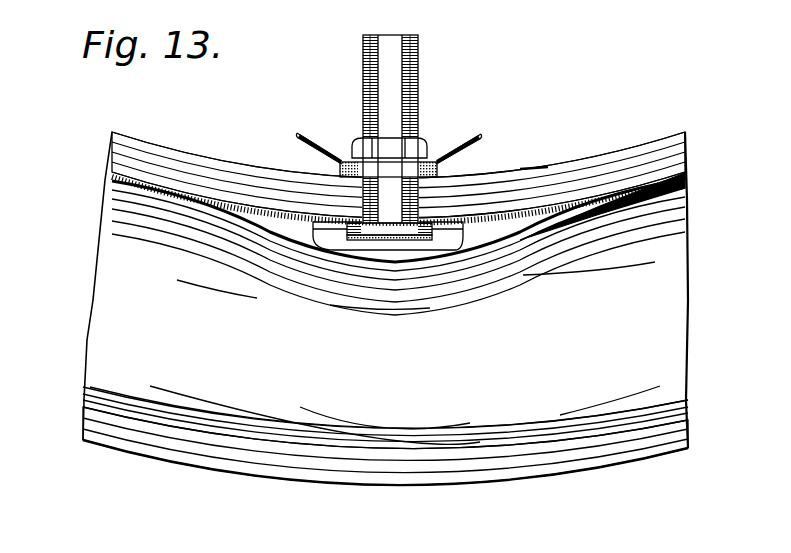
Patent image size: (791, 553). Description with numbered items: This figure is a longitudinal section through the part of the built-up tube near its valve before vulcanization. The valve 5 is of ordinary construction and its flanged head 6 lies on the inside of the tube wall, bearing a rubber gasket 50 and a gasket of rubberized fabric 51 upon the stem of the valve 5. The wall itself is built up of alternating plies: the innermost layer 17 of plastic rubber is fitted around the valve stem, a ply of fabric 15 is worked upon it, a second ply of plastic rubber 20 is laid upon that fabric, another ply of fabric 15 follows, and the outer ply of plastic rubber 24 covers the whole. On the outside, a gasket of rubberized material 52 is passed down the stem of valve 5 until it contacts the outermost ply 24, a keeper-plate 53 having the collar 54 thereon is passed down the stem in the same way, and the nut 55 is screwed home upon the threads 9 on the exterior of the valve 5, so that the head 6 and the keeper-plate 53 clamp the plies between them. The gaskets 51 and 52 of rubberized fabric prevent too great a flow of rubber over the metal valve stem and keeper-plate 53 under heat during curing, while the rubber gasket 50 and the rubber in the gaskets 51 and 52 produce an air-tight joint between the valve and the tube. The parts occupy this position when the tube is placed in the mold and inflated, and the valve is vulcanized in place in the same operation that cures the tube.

The valve 5 is at (408, 129).
The threads 9 is at (418, 94).
The nut 55 is at (360, 148).
The keeper-plate 53 is at (460, 137).
The collar 54 is at (430, 168).
The gasket of rubberized material 52 is at (522, 170).
The second ply of plastic rubber 20 is at (640, 163).
The outer ply of plastic rubber 24 is at (683, 133).
The layer of plastic rubber 17 is at (662, 168).
The flanged head 6 is at (387, 230).
The rubber gasket 50 is at (400, 243).
The gasket of rubberized fabric 51 is at (490, 220).
The fabric 15 is at (570, 467).